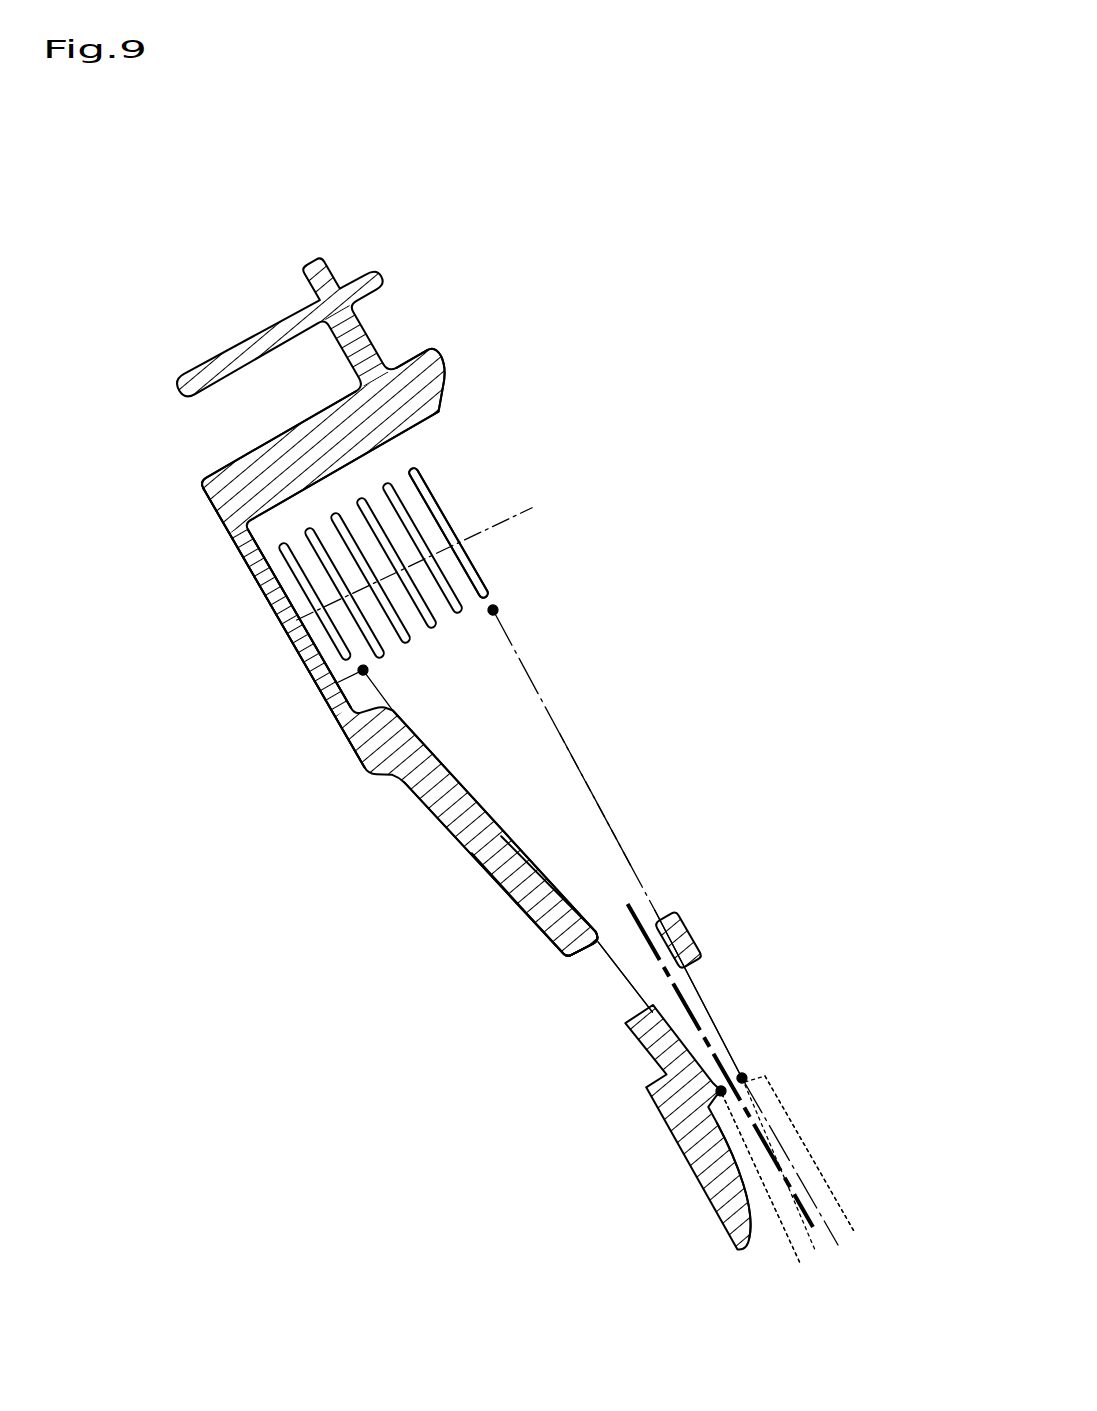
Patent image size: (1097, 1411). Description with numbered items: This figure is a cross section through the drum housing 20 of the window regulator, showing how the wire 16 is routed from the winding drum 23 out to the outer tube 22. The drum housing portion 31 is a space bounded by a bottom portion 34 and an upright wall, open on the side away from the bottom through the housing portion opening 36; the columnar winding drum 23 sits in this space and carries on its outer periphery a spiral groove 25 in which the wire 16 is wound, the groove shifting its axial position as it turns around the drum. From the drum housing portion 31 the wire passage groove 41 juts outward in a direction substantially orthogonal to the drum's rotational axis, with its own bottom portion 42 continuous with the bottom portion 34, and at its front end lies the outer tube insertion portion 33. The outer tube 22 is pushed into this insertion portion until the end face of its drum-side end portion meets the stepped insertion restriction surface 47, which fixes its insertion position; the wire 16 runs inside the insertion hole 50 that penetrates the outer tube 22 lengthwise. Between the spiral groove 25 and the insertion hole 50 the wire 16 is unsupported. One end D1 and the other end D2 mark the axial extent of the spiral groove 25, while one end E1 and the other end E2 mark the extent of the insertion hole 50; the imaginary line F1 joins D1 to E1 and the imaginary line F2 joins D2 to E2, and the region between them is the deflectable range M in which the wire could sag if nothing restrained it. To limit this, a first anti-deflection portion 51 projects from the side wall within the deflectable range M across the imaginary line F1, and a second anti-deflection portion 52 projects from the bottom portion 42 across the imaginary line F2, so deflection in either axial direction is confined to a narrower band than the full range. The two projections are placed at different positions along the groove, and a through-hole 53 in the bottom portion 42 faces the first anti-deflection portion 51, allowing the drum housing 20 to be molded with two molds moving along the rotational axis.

The drum housing 20 is at (461, 326).
The housing portion opening 36 is at (447, 400).
The winding drum 23 is at (448, 496).
The spiral groove 25 is at (457, 576).
The bottom portion 34 is at (258, 563).
The drum housing portion 31 is at (268, 623).
The wire passage groove 41 is at (488, 890).
The bottom portion 42 is at (537, 892).
The through-hole 53 is at (580, 960).
The wire 16 is at (648, 912).
The first anti-deflection portion 51 is at (685, 940).
The second anti-deflection portion 52 is at (729, 1043).
The outer tube insertion portion 33 is at (712, 1185).
The insertion restriction surface 47 is at (712, 1150).
The insertion hole 50 is at (792, 1170).
The outer tube 22 is at (820, 1192).
The one end of the formation range of the spiral groove D1 is at (496, 608).
The other end of the formation range of the spiral groove D2 is at (323, 703).
The one end of the formation range of the insertion hole E1 is at (746, 1074).
The other end of the formation range of the insertion hole E2 is at (716, 1096).
The deflectable range M is at (552, 784).
The imaginary line F1 is at (613, 826).
The imaginary line F2 is at (630, 992).